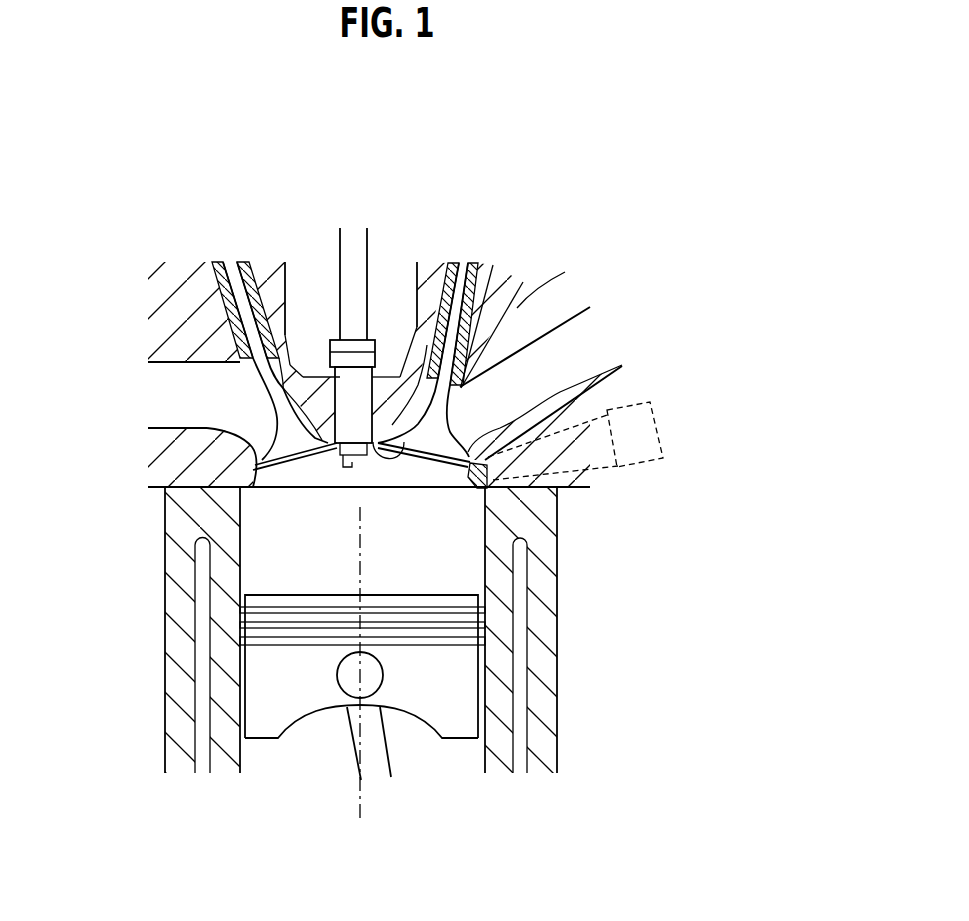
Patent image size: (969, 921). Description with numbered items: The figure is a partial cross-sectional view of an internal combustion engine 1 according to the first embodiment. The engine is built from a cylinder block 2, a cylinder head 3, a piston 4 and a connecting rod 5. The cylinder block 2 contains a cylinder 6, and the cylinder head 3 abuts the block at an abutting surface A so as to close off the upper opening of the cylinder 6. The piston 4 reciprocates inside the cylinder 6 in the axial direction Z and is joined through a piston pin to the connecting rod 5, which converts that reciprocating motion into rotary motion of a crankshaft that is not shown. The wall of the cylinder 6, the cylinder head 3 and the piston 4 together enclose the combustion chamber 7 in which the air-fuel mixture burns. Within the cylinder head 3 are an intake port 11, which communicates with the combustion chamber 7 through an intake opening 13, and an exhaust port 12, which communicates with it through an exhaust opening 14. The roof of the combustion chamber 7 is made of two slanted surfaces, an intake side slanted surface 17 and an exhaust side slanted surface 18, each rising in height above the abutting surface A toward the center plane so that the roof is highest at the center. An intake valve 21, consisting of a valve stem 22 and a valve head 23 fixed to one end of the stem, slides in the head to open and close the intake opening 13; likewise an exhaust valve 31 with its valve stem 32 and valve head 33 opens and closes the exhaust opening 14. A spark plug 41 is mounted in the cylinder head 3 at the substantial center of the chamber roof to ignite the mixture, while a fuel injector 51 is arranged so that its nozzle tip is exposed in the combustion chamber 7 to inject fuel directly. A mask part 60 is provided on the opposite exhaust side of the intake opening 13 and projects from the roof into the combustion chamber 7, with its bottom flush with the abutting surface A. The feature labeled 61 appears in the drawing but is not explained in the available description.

The internal combustion engine 1 is at (588, 190).
The cylinder block 2 is at (548, 750).
The cylinder head 3 is at (560, 279).
The piston 4 is at (458, 727).
The connecting rod 5 is at (390, 753).
The cylinder 6 is at (250, 552).
The combustion chamber 7 is at (450, 575).
The intake port 11 is at (582, 331).
The exhaust port 12 is at (177, 378).
The intake opening 13 is at (462, 434).
The exhaust opening 14 is at (262, 436).
The intake side slanted surface 17 is at (420, 430).
The exhaust side slanted surface 18 is at (240, 478).
The intake valve 21 is at (472, 251).
The valve stem 22 is at (441, 270).
The valve head 23 is at (428, 270).
The exhaust valve 31 is at (226, 258).
The valve stem 32 is at (256, 272).
The valve head 33 is at (260, 457).
The spark plug 41 is at (360, 248).
The fuel injector 51 is at (665, 428).
The mask part 60 is at (470, 520).
The valve seat insert 61 is at (462, 482).
The abutting surface A is at (157, 488).
The axial direction Z is at (360, 817).